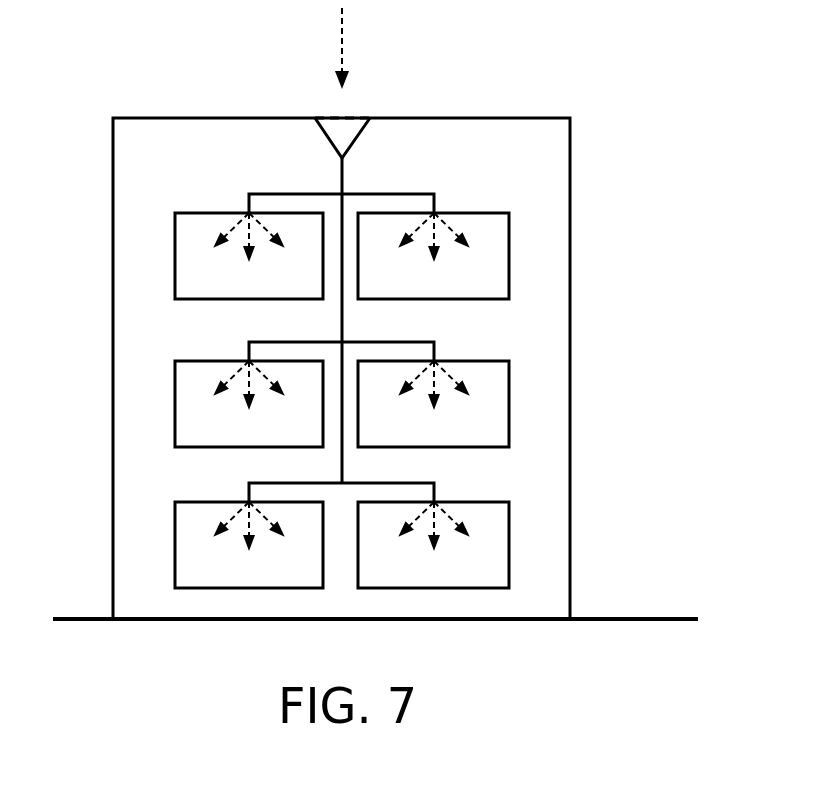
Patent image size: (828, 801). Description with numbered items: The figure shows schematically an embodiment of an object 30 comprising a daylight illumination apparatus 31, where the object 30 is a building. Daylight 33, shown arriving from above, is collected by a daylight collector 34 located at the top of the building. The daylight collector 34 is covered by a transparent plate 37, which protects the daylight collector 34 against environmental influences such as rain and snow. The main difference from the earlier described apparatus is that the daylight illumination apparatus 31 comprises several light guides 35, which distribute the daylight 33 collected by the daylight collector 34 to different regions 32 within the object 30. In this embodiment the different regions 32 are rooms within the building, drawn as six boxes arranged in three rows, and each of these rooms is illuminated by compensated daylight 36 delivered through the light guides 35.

The object 30 is at (616, 134).
The daylight illumination apparatus 31 is at (322, 170).
The regions 32 is at (206, 263).
The daylight 33 is at (342, 38).
The daylight collector 34 is at (361, 137).
The light guides 35 is at (410, 194).
The compensated daylight 36 is at (470, 254).
The transparent plate 37 is at (334, 118).